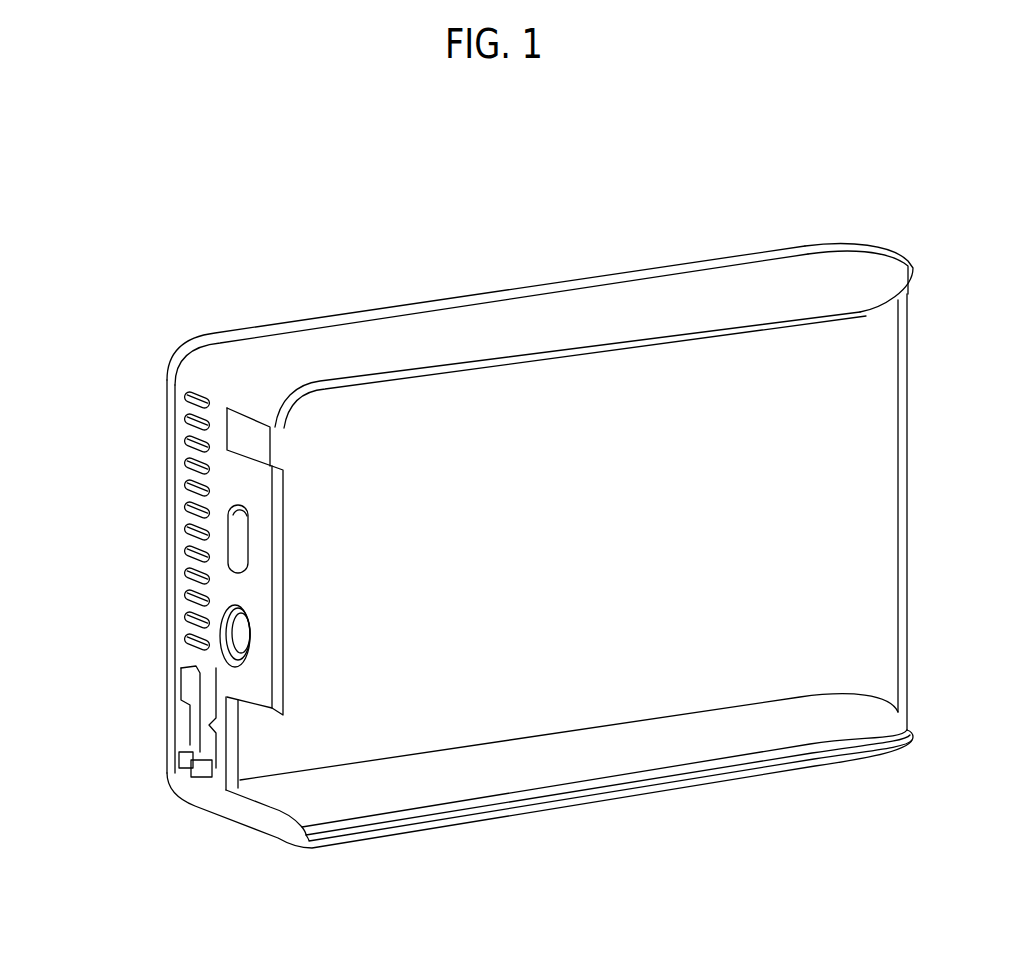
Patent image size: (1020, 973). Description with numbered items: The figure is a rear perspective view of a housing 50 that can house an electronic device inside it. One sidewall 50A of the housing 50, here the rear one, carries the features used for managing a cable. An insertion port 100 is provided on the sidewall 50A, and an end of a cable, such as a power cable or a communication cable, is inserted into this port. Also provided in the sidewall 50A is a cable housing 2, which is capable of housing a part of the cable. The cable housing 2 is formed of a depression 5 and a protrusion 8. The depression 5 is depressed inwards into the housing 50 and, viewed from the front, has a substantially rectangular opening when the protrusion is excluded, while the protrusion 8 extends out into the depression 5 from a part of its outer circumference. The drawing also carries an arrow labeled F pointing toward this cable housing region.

The housing 50 is at (595, 230).
The sidewall 50A is at (183, 455).
The insertion port 100 is at (256, 641).
The protrusion 8 is at (183, 717).
The force direction F is at (140, 752).
The cable housing 2 is at (183, 767).
The depression 5 is at (203, 772).